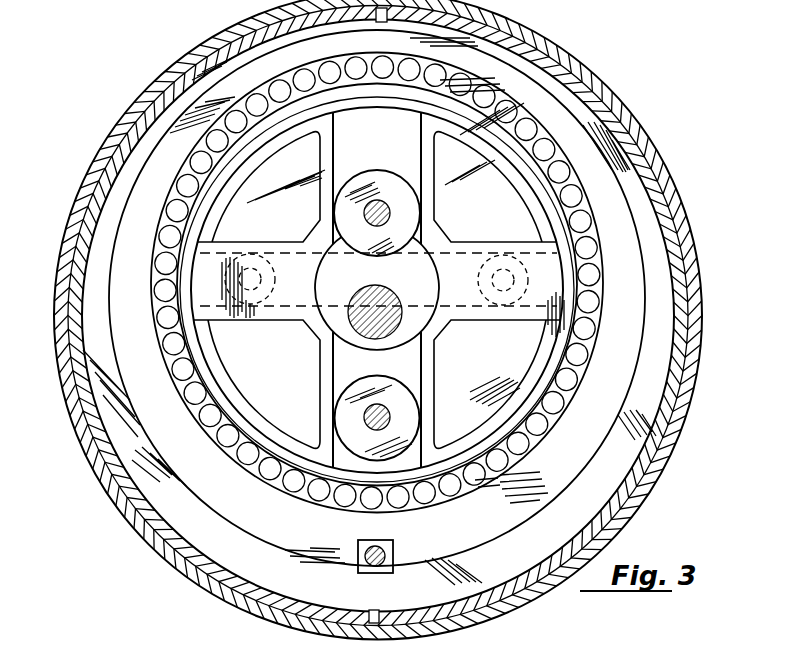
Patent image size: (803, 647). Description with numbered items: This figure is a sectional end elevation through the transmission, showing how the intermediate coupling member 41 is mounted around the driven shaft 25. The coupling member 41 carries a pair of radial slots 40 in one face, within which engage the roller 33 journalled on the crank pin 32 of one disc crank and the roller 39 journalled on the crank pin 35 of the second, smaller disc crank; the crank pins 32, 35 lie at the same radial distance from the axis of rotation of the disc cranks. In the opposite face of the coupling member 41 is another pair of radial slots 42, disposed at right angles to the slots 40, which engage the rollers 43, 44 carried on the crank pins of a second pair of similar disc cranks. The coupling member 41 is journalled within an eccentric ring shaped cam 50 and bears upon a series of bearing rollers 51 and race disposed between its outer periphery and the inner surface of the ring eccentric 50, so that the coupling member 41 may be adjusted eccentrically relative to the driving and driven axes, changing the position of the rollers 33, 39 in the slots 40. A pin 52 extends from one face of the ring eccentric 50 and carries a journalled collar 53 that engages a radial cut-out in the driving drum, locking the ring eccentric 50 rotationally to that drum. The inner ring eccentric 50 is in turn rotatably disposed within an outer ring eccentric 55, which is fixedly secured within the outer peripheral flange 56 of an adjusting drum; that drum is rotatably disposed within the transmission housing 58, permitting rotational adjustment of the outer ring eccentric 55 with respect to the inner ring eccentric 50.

The driven shaft 25 is at (383, 296).
The crank pin 32 is at (383, 203).
The roller 33 is at (400, 192).
The crank pin 35 is at (364, 418).
The roller 39 is at (407, 397).
The radial slots 40 is at (378, 170).
The intermediate coupling member 41 is at (212, 370).
The radial slots 42 is at (285, 305).
The roller 43 is at (479, 260).
The roller 44 is at (275, 282).
The eccentric ring shaped cam 50 is at (560, 110).
The bearing rollers 51 is at (560, 160).
The pin 52 is at (386, 553).
The collar 53 is at (358, 546).
The outer ring eccentric 55 is at (630, 183).
The outer peripheral flange 56 is at (615, 126).
The transmission housing 58 is at (576, 60).